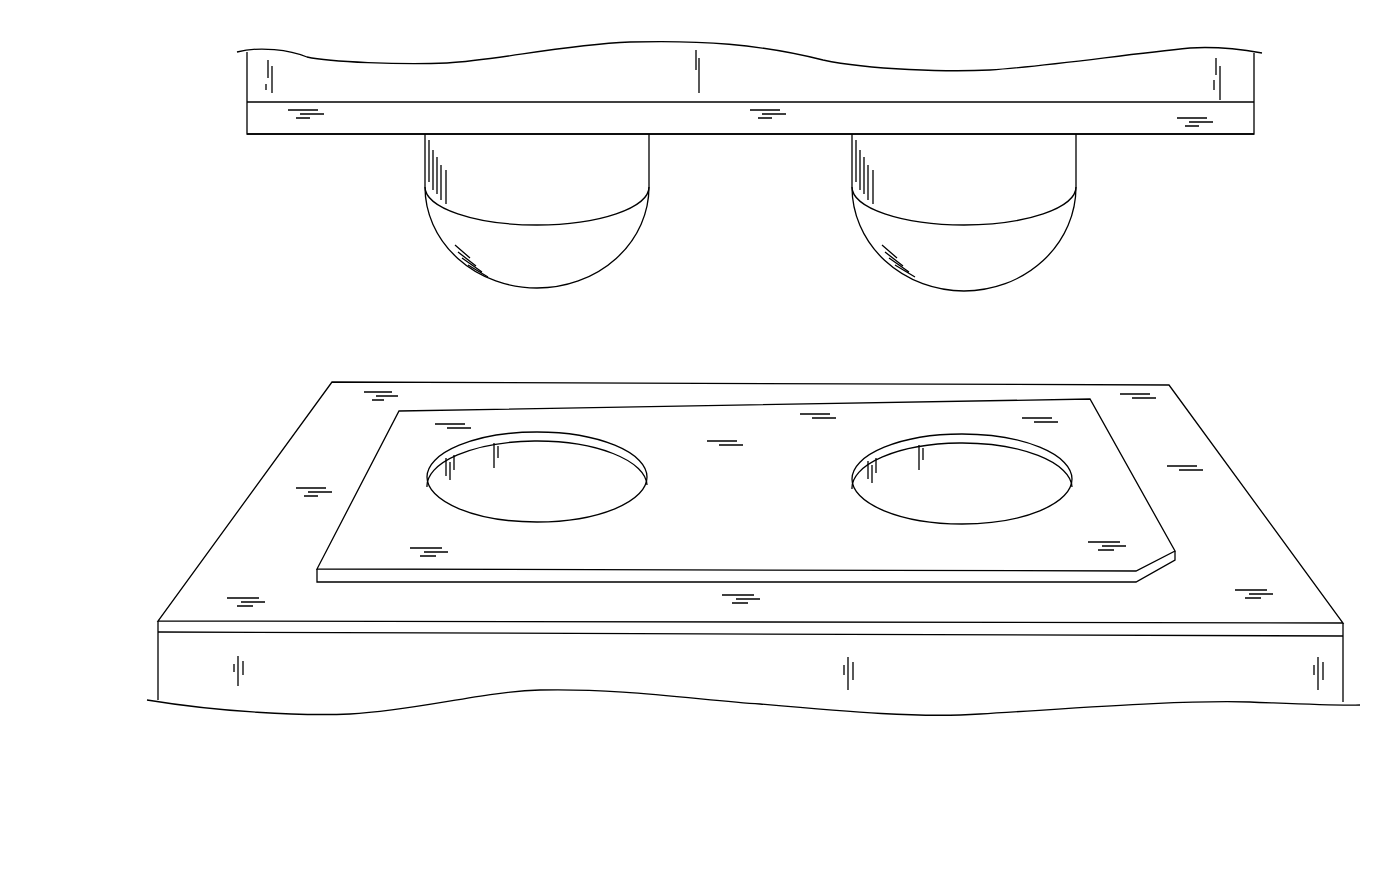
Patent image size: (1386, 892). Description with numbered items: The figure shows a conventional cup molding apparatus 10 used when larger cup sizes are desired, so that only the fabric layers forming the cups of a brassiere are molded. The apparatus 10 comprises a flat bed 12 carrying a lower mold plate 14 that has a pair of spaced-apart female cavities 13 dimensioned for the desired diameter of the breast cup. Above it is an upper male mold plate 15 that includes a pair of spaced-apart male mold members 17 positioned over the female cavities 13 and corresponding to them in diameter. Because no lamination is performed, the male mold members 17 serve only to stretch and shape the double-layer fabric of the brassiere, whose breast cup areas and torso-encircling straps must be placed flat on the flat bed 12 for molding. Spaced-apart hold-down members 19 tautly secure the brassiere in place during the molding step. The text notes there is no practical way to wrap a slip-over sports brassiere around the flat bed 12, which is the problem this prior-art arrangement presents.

The molding apparatus 10 is at (1240, 255).
The flat bed 12 is at (1198, 424).
The female cavities 13 is at (535, 524).
The lower mold plate 14 is at (1161, 528).
The upper male mold plate 15 is at (1254, 122).
The male mold members 17 is at (447, 234).
The hold-down members 19 is at (1153, 136).